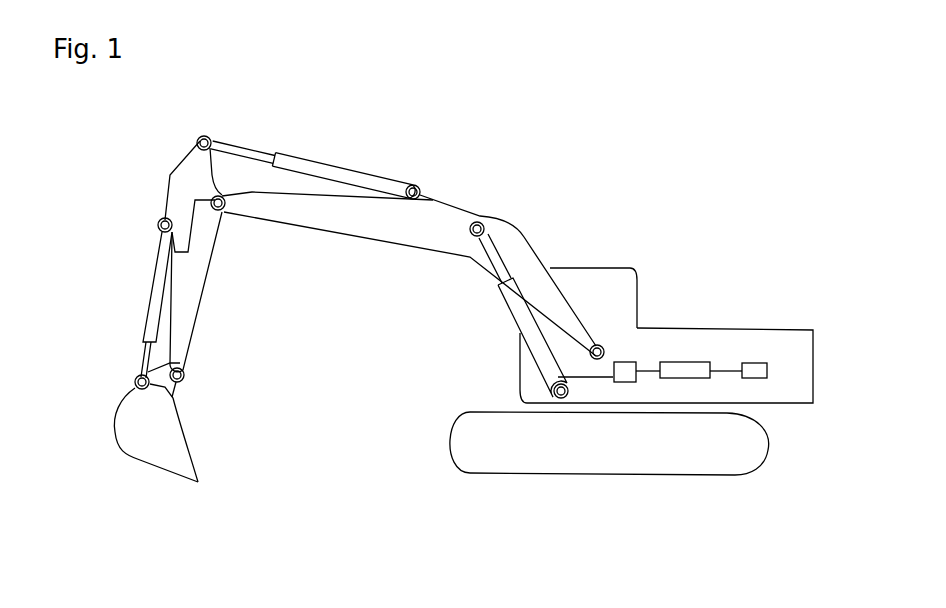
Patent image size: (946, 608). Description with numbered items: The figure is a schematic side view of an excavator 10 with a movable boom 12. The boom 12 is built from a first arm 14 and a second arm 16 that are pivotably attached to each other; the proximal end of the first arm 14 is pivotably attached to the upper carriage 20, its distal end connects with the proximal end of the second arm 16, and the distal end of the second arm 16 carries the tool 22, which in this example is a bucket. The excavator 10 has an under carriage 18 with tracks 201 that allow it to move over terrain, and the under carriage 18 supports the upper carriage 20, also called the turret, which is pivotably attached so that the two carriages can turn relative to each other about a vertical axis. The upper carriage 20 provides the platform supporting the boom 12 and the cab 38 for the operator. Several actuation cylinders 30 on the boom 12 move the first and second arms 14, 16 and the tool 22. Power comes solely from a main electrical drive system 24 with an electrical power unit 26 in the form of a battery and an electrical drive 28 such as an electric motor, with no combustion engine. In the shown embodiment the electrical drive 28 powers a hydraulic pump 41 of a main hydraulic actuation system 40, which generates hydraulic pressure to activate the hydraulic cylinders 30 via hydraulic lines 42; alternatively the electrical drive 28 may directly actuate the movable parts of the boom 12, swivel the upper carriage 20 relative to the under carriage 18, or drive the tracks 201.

The excavator 10 is at (722, 234).
The boom 12 is at (341, 102).
The first arm 14 is at (508, 212).
The second arm 16 is at (182, 192).
The under carriage 18 is at (659, 497).
The upper carriage 20 is at (828, 317).
The tool 22 is at (132, 427).
The main electrical drive system 24 is at (773, 347).
The electrical power unit 26 is at (767, 370).
The electrical drive 28 is at (700, 378).
The actuation cylinders 30 is at (158, 268).
The cab 38 is at (600, 280).
The main hydraulic actuation system 40 is at (613, 314).
The hydraulic pump 41 is at (627, 362).
The hydraulic lines 42 is at (468, 228).
The tracks 201 is at (463, 468).